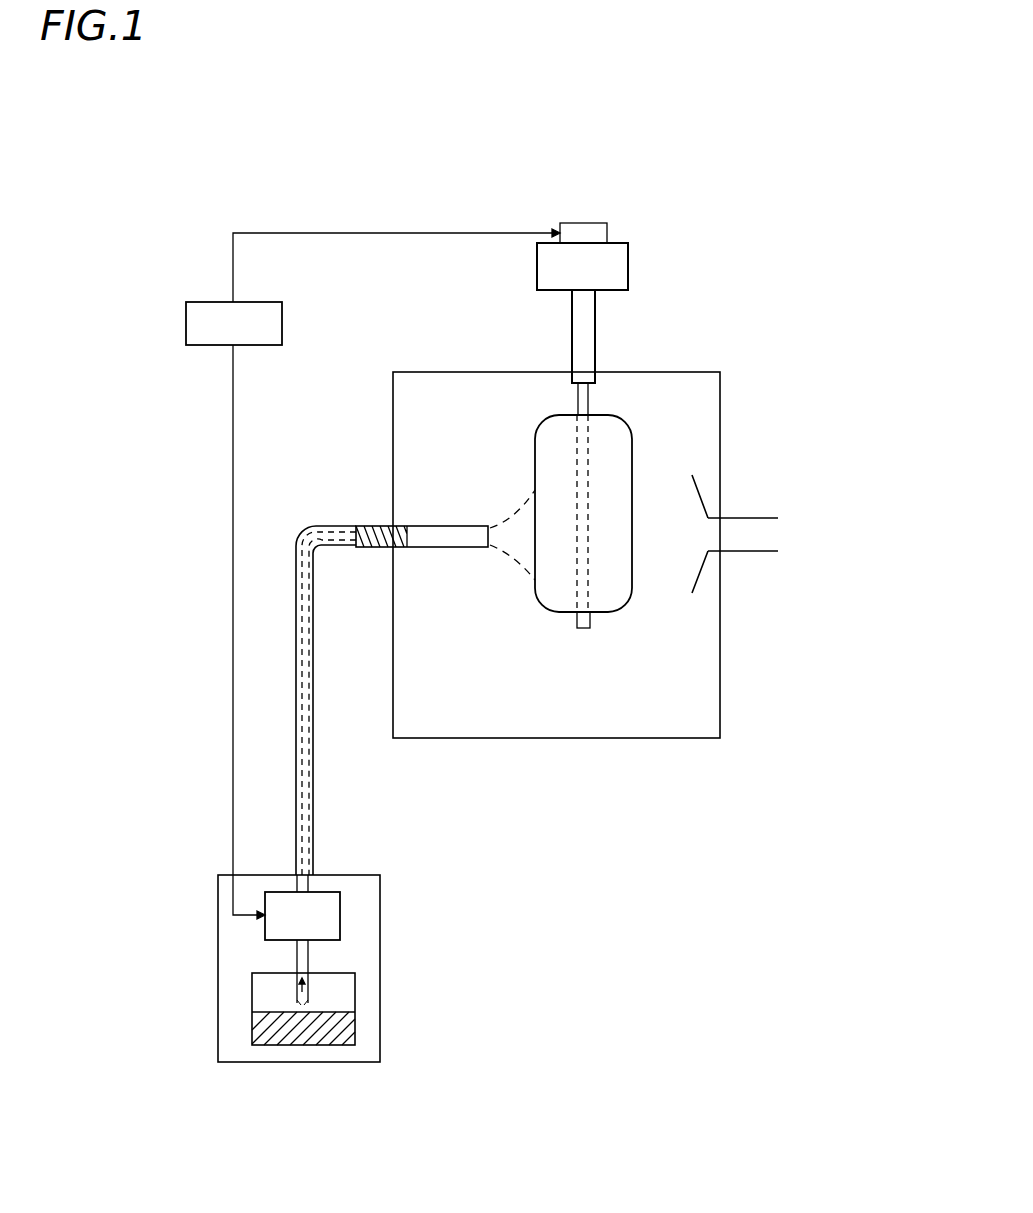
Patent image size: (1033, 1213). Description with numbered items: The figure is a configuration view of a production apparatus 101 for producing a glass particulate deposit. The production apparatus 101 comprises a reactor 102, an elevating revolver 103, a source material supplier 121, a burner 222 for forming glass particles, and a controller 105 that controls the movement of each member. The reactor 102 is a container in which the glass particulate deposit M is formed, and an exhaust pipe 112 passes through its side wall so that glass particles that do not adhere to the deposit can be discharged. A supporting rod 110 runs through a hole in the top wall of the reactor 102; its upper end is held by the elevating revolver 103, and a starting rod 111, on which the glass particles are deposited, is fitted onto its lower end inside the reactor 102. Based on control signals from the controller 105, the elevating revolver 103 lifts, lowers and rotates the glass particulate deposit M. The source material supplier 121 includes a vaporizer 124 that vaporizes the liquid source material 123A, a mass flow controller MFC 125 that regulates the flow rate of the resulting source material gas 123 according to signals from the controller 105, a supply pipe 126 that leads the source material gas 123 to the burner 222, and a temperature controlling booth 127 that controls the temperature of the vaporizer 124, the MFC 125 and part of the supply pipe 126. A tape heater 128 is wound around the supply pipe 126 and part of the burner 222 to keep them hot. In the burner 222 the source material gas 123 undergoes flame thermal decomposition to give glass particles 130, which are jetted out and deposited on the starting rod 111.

The production apparatus 101 is at (630, 186).
The reactor 102 is at (723, 392).
The elevating revolver 103 is at (628, 250).
The controller 105 is at (200, 302).
The supporting rod 110 is at (596, 330).
The starting rod 111 is at (590, 400).
The exhaust pipe 112 is at (750, 518).
The glass particulate deposit M is at (533, 452).
The source material supplier 121 is at (399, 874).
The source material gas 123 is at (290, 993).
The liquid source material 123A is at (343, 1028).
The vaporizer 124 is at (355, 985).
The mass flow controller (MFC) 125 is at (340, 910).
The supply pipe 126 is at (323, 802).
The temperature controlling booth 127 is at (380, 950).
The tape heater 128 is at (328, 527).
The glass particles 130 is at (500, 560).
The burner 222 is at (450, 526).